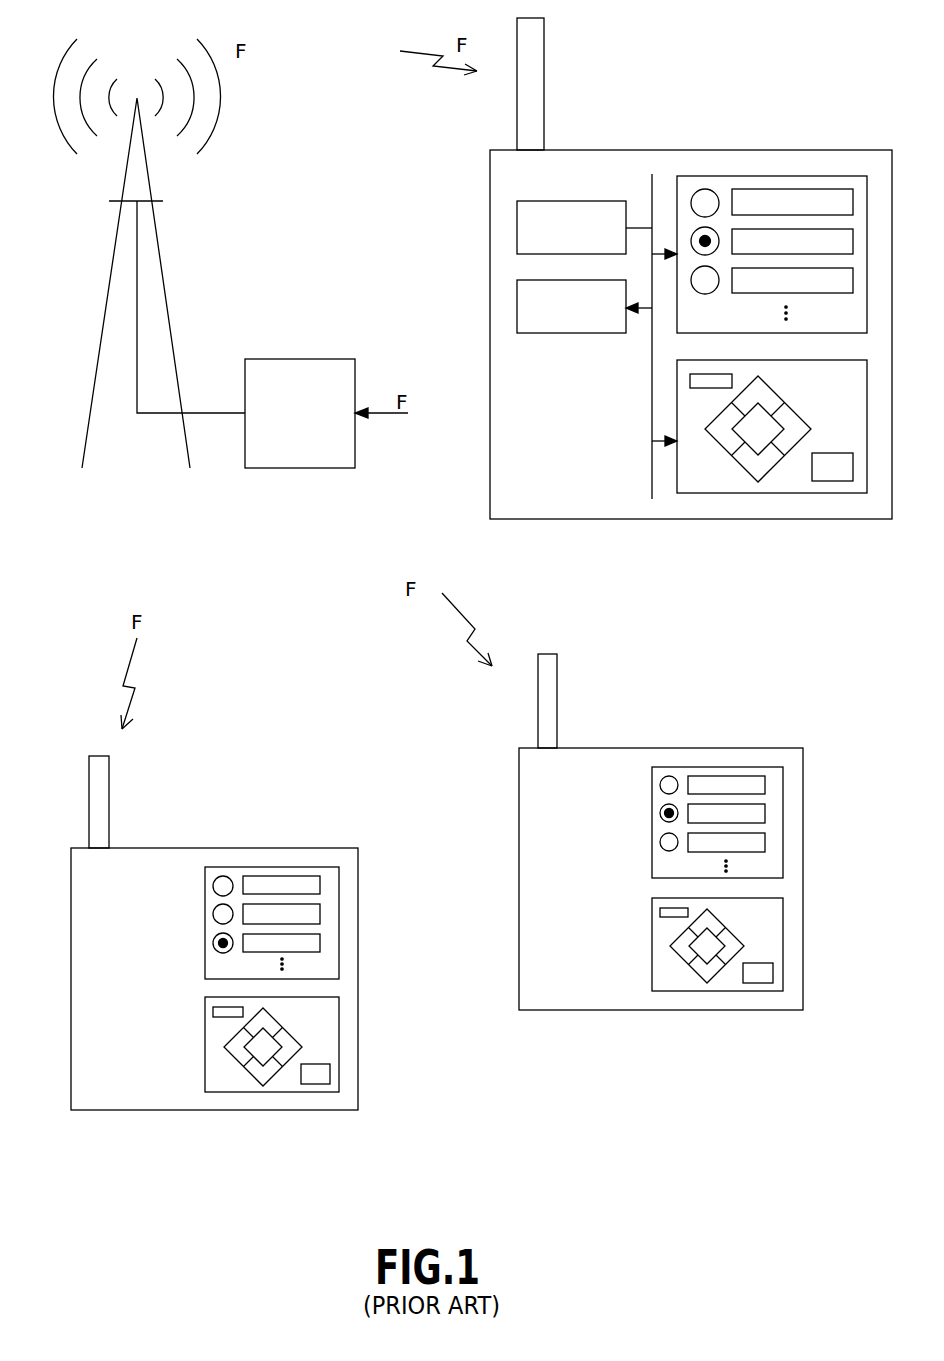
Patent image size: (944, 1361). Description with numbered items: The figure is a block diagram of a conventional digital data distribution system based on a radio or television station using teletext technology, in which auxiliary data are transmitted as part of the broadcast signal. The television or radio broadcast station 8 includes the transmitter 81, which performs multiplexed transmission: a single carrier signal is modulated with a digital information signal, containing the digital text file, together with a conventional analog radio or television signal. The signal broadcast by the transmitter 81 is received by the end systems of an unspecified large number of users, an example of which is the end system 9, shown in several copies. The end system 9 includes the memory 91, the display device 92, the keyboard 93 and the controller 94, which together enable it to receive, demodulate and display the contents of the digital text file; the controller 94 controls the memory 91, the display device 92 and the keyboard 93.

The television or radio broadcast station 8 is at (204, 243).
The transmitter 81 is at (315, 351).
The end system 9 is at (784, 143).
The memory 91 is at (579, 193).
The display device 92 is at (832, 168).
The keyboard 93 is at (819, 485).
The controller 94 is at (567, 325).